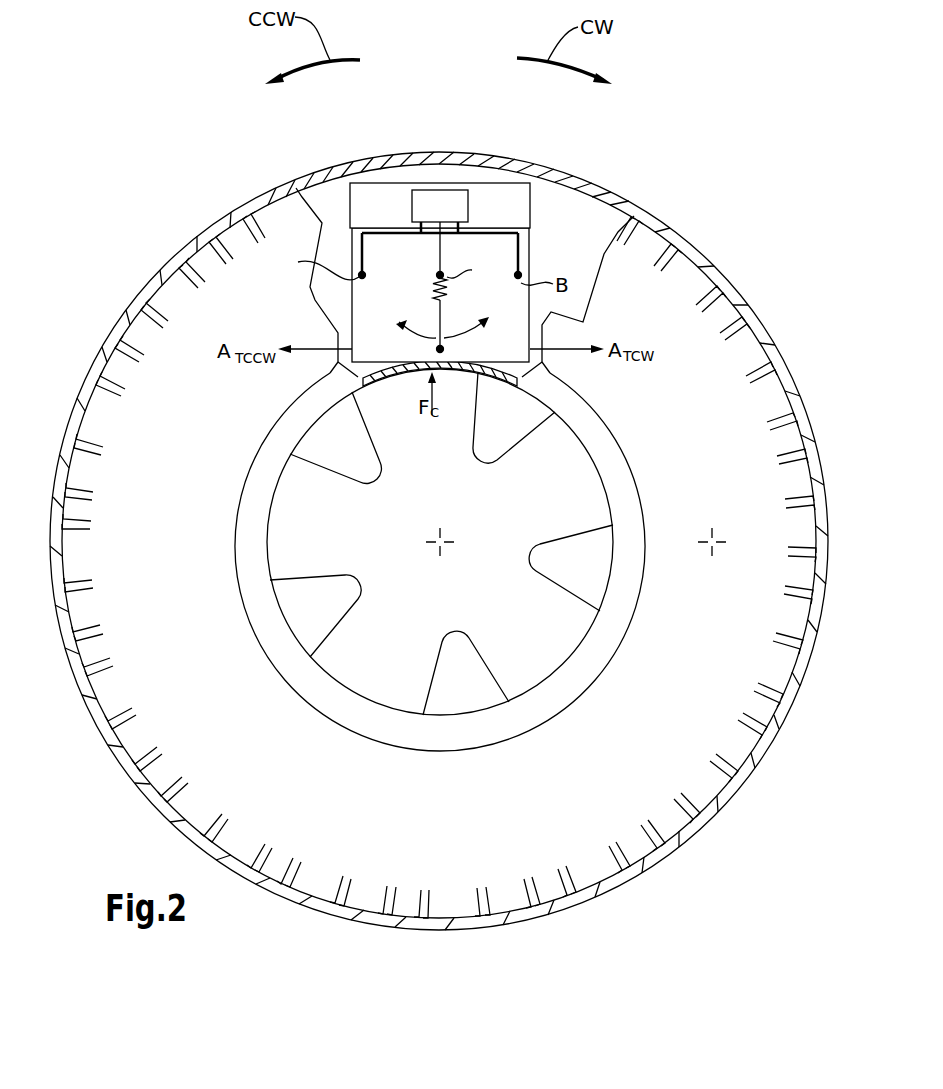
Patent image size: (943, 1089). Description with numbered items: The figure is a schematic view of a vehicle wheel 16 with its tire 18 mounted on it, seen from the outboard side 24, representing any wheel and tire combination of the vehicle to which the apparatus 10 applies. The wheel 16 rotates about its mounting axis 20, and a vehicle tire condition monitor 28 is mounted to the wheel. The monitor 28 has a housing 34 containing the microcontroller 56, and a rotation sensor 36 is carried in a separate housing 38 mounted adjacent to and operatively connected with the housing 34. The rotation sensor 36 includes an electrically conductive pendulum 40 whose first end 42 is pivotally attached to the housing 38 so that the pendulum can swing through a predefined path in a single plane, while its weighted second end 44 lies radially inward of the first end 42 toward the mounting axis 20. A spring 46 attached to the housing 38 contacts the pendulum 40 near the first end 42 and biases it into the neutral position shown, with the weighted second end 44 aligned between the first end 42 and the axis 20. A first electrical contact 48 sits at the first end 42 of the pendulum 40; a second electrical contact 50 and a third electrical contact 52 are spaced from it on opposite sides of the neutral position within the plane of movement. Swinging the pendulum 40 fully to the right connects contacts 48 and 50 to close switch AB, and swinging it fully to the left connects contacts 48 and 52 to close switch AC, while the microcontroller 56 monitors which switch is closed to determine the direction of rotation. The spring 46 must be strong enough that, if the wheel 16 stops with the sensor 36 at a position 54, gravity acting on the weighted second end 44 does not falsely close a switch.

The apparatus 10 is at (150, 196).
The wheel 16 is at (613, 460).
The tire 18 is at (97, 687).
The mounting axis 20 is at (440, 542).
The outboard side 24 is at (205, 395).
The vehicle tire condition monitor 28 is at (270, 181).
The housing 34 is at (338, 197).
The rotation sensor 36 is at (344, 250).
The separate housing 38 is at (337, 313).
The pendulum 40 is at (447, 322).
The first end 42 is at (443, 273).
The second end 44 is at (440, 349).
The spring 46 is at (438, 293).
The first electrical contact 48 is at (438, 273).
The second electrical contact 50 is at (520, 270).
The third electrical contact 52 is at (358, 284).
The position 54 is at (712, 542).
The microcontroller 56 is at (470, 202).